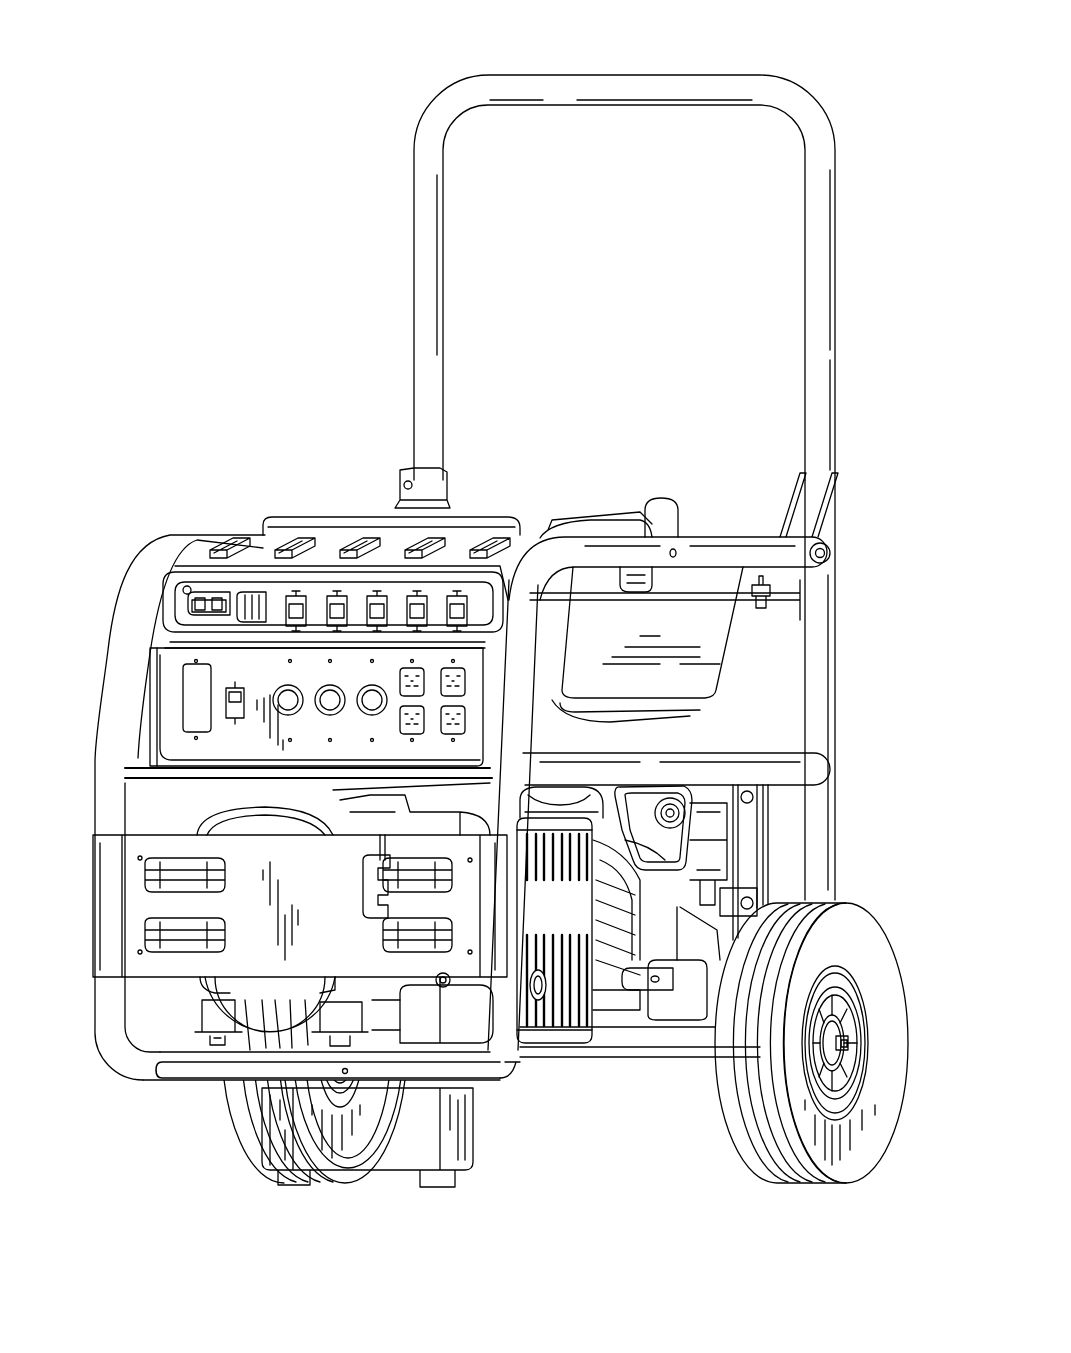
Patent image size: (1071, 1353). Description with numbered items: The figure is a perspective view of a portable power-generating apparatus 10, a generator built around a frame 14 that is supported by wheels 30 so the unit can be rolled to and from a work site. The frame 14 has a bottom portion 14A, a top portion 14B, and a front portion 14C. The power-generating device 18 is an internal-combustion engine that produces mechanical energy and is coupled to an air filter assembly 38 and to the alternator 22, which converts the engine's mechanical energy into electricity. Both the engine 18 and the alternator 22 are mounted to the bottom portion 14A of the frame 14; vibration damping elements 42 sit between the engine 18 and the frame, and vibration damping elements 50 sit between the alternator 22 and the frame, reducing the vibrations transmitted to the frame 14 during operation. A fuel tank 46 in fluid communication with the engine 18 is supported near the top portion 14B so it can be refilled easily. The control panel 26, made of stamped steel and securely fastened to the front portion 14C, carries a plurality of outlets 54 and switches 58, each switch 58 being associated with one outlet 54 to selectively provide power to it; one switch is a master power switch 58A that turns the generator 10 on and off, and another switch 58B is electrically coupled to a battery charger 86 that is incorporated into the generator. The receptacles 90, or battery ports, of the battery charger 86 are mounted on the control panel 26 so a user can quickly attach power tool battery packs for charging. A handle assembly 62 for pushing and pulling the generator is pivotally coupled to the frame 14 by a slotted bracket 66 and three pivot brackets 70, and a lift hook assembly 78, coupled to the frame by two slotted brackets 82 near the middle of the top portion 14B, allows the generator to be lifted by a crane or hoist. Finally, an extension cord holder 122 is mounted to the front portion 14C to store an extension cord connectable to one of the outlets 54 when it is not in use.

The power-generating apparatus 10 is at (180, 322).
The frame 14 is at (822, 628).
The bottom portion of the frame 14A is at (589, 1068).
The top portion of the frame 14B is at (738, 540).
The front portion of the frame 14C is at (102, 808).
The power-generating device 18 is at (680, 782).
The alternator 22 is at (264, 830).
The control panel 26 is at (180, 620).
The wheels 30 is at (893, 1006).
The air filter assembly 38 is at (554, 1046).
The vibration damping elements 42 is at (633, 1047).
The fuel tank 46 is at (718, 637).
The vibration damping elements 50 is at (292, 1012).
The outlets 54 is at (466, 722).
The switches 58 is at (385, 592).
The master power switch 58A is at (205, 592).
The switch 58B is at (256, 588).
The handle assembly 62 is at (692, 86).
The slotted bracket 66 is at (444, 478).
The pivot brackets 70 is at (826, 513).
The lift hook assembly 78 is at (598, 530).
The slotted brackets 82 is at (674, 512).
The battery charger 86 is at (390, 555).
The receptacles 90 is at (358, 538).
The extension cord holder 122 is at (146, 907).